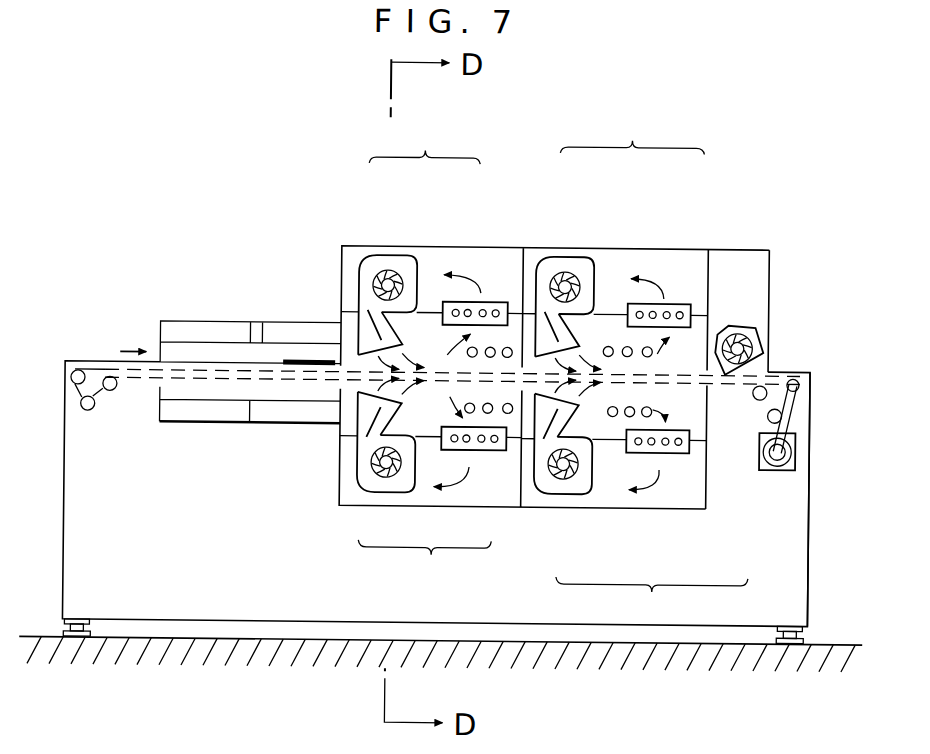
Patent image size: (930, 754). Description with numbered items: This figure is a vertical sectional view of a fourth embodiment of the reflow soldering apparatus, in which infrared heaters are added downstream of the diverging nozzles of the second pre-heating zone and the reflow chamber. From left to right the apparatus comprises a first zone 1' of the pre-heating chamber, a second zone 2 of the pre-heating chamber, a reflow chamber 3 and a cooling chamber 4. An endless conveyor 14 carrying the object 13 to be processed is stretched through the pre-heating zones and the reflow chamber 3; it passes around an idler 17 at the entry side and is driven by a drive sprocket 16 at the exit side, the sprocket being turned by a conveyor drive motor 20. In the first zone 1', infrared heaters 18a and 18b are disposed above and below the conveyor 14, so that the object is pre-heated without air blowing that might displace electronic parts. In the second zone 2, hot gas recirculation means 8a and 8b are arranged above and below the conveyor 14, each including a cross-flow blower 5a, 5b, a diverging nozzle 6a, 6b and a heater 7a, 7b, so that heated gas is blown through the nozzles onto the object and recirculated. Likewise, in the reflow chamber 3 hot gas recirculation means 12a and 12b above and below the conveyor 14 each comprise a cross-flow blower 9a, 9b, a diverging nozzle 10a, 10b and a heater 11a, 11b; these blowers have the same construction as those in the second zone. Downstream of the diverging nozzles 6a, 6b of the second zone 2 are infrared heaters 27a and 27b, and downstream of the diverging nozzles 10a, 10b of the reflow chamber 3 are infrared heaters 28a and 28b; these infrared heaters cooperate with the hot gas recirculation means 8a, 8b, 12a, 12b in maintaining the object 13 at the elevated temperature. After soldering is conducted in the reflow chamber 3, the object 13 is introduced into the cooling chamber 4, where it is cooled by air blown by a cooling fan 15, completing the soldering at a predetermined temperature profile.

The first zone of the pre-heating chamber 1' is at (436, 444).
The second zone of the pre-heating chamber 2 is at (343, 247).
The reflow chamber 3 is at (705, 247).
The cooling chamber 4 is at (758, 247).
The cross-flow blower 5a is at (382, 256).
The cross-flow blower 5b is at (378, 494).
The diverging nozzle 6a is at (405, 326).
The diverging nozzle 6b is at (400, 438).
The heater 7a is at (497, 302).
The heater 7b is at (485, 450).
The hot gas recirculation means 8a is at (433, 243).
The hot gas recirculation means 8b is at (430, 485).
The cross-flow blower 9a is at (548, 262).
The cross-flow blower 9b is at (546, 494).
The diverging nozzle 10a is at (595, 330).
The diverging nozzle 10b is at (575, 440).
The heater 11a is at (676, 302).
The heater 11b is at (680, 452).
The hot gas recirculation means 12a is at (616, 235).
The hot gas recirculation means 12b is at (634, 504).
The object 13 is at (311, 360).
The endless conveyor 14 is at (123, 371).
The cooling fan 15 is at (728, 323).
The drive sprocket 16 is at (793, 376).
The idler 17 is at (76, 374).
The infrared heater 18a is at (262, 324).
The infrared heater 18b is at (272, 425).
The conveyor drive motor 20 is at (776, 468).
The infrared heater 27a is at (508, 347).
The infrared heater 27b is at (510, 413).
The infrared heater 28a is at (609, 345).
The infrared heater 28b is at (610, 417).